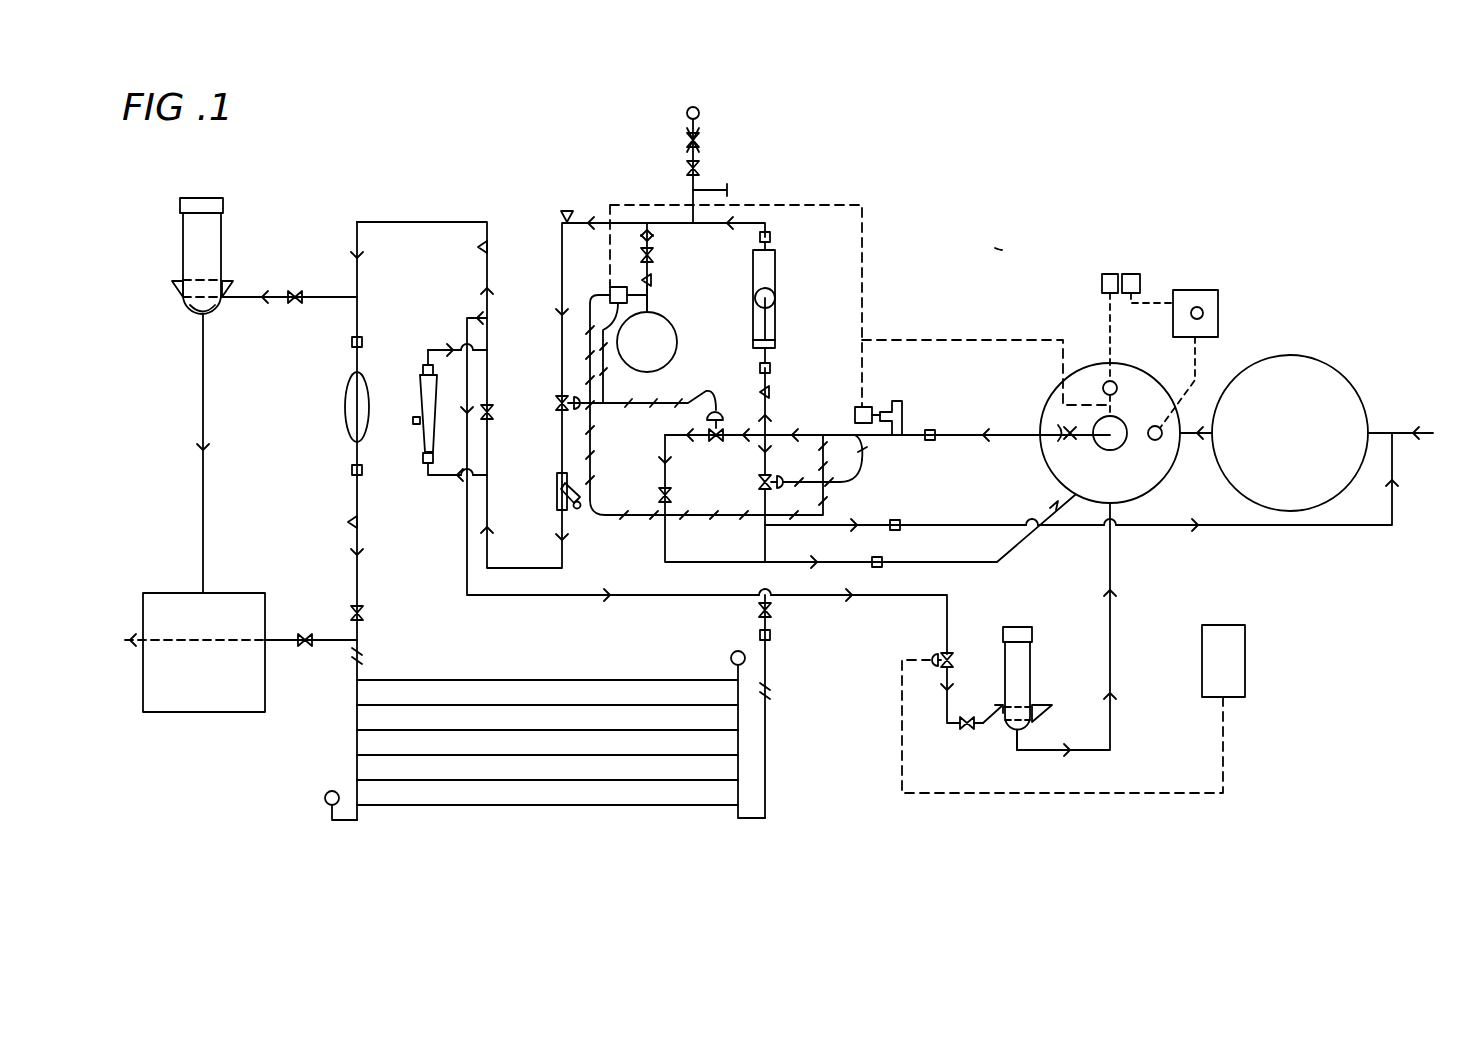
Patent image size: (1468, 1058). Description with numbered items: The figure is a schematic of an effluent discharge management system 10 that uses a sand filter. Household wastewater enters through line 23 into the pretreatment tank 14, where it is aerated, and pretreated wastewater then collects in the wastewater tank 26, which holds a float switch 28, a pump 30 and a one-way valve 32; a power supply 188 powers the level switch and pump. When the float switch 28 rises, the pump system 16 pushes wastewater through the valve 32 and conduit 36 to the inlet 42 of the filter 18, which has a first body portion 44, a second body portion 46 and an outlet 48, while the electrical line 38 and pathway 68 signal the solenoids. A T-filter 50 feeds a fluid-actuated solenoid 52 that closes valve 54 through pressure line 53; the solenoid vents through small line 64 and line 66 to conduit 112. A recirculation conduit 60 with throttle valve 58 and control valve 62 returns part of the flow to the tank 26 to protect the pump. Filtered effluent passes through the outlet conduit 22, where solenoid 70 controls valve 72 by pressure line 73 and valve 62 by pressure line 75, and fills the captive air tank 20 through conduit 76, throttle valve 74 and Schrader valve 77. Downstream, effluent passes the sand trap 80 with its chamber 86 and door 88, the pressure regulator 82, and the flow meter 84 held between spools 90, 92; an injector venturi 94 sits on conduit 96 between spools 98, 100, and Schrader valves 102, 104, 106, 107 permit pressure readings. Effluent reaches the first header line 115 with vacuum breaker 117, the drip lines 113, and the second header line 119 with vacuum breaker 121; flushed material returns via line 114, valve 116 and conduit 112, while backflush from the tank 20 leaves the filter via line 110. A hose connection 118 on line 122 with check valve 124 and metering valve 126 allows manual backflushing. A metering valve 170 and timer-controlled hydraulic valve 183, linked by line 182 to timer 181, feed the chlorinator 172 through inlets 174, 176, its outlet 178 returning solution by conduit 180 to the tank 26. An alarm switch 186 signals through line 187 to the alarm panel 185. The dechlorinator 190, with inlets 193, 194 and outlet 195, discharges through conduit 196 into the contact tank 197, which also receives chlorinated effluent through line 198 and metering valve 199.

The effluent discharge management system 10 is at (995, 248).
The wastewater inlet 14 is at (1345, 385).
The pump system 16 is at (1158, 475).
The filter 18 is at (778, 280).
The filtered water retaining chamber 20 is at (670, 345).
The outlet conduit 22 is at (357, 238).
The line 23 is at (1402, 433).
The wastewater tank 26 is at (1045, 478).
The float switch 28 is at (1117, 385).
The pump 30 is at (1115, 448).
The valve 32 is at (1075, 440).
The conduit 36 is at (968, 433).
The electrical line 38 is at (985, 340).
The inlet 42 is at (778, 300).
The first body portion 44 is at (760, 300).
The second body portion 46 is at (778, 340).
The outlet 48 is at (772, 240).
The T-filter 50 is at (905, 415).
The solenoid 52 is at (872, 407).
The pressure line 53 is at (855, 482).
The valve 54 is at (775, 475).
The throttle valve 58 is at (672, 492).
The conduit 60 is at (675, 555).
The control valve 62 is at (713, 442).
The small line 64 is at (866, 455).
The line 66 is at (595, 450).
The pathway 68 is at (868, 250).
The solenoid 70 is at (612, 286).
The valve 72 is at (555, 400).
The pressure line 73 is at (615, 380).
The throttle valve 74 is at (655, 253).
The pressure line 75 is at (700, 395).
The conduit 76 is at (658, 275).
The Schrader valve 77 is at (657, 288).
The sand trap 80 is at (557, 485).
The pressure regulator 82 is at (494, 410).
The flow meter 84 is at (345, 407).
The chamber 86 is at (582, 490).
The door 88 is at (578, 509).
The spool 90 is at (352, 474).
The spool 92 is at (352, 344).
The injector venturi valve 94 is at (428, 400).
The conduit 96 is at (433, 480).
The spool 98 is at (423, 366).
The spool 100 is at (424, 463).
The Schrader valve 102 is at (776, 392).
The Schrader valve 104 is at (560, 213).
The Schrader valve 106 is at (497, 250).
The Schrader valve 107 is at (370, 525).
The line 110 is at (770, 425).
The conduit 112 is at (1285, 525).
The drip lines 113 is at (518, 680).
The line 114 is at (765, 765).
The header line 115 is at (357, 765).
The valve 116 is at (760, 612).
The vacuum breaker 117 is at (325, 795).
The hose connection 118 is at (688, 110).
The header line 119 is at (740, 738).
The vacuum breaker 121 is at (731, 658).
The line 122 is at (700, 118).
The check valve 124 is at (688, 140).
The metering valve 126 is at (700, 168).
The metering valve 170 is at (962, 732).
The chlorinator 172 is at (1020, 660).
The first inlet 174 is at (1003, 723).
The second inlet 176 is at (1035, 722).
The outlet 178 is at (1025, 745).
The conduit 180 is at (545, 595).
The timer 181 is at (1240, 630).
The line 182 is at (1150, 793).
The hydraulic valve 183 is at (947, 652).
The high level alarm panel 185 is at (1218, 302).
The alarm switch 186 is at (1160, 440).
The line 187 is at (1200, 380).
The power supply 188 is at (1140, 285).
The dechlorinator 190 is at (183, 243).
The inlet 193 is at (233, 297).
The inlet 194 is at (172, 297).
The outlet 195 is at (200, 314).
The conduit 196 is at (203, 425).
The contact tank 197 is at (183, 712).
The line 198 is at (335, 615).
The metering valve 199 is at (305, 648).